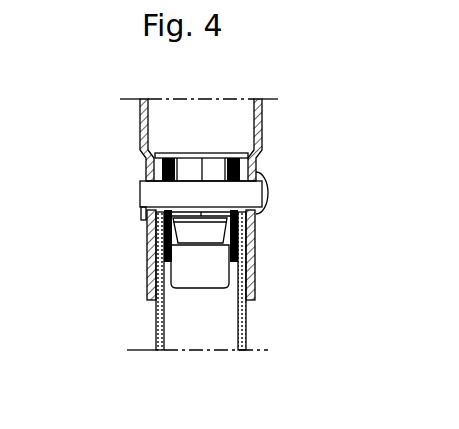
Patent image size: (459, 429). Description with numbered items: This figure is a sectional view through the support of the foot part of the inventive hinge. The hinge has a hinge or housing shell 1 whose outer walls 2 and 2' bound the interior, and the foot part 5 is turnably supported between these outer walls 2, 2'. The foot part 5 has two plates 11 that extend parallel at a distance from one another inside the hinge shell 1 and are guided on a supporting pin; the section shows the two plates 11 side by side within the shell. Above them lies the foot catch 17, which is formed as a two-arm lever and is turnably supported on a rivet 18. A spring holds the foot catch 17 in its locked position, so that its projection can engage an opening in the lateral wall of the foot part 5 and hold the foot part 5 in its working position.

The hinge shell 1 is at (208, 153).
The outer wall 2 is at (120, 140).
The outer wall 2' is at (289, 156).
The foot catch 17 is at (186, 162).
The rivet 18 is at (168, 188).
The plates 11 is at (156, 330).
The foot part 5 is at (262, 340).